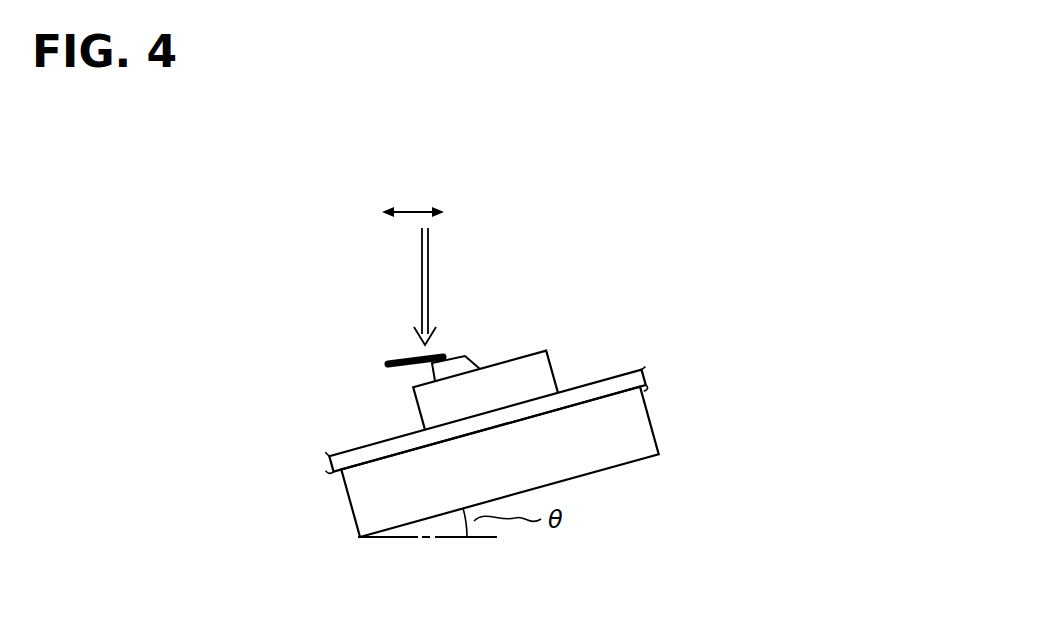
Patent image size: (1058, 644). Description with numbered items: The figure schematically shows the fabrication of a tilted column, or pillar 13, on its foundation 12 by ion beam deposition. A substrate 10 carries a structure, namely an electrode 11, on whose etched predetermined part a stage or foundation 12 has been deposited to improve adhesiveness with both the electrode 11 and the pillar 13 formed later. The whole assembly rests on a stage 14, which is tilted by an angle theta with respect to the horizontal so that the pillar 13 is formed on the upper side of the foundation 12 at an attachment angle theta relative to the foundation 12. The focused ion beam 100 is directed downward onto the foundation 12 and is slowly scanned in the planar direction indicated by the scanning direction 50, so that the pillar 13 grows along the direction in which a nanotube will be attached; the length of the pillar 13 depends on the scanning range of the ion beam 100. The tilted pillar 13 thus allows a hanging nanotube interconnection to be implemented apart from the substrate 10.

The substrate 10 is at (613, 378).
The structure (electrode) 11 is at (548, 368).
The foundation 12 is at (464, 356).
The pillar 13 is at (386, 357).
The stage 14 is at (638, 430).
The scanning direction 50 is at (415, 208).
The focused ion beam 100 is at (430, 278).